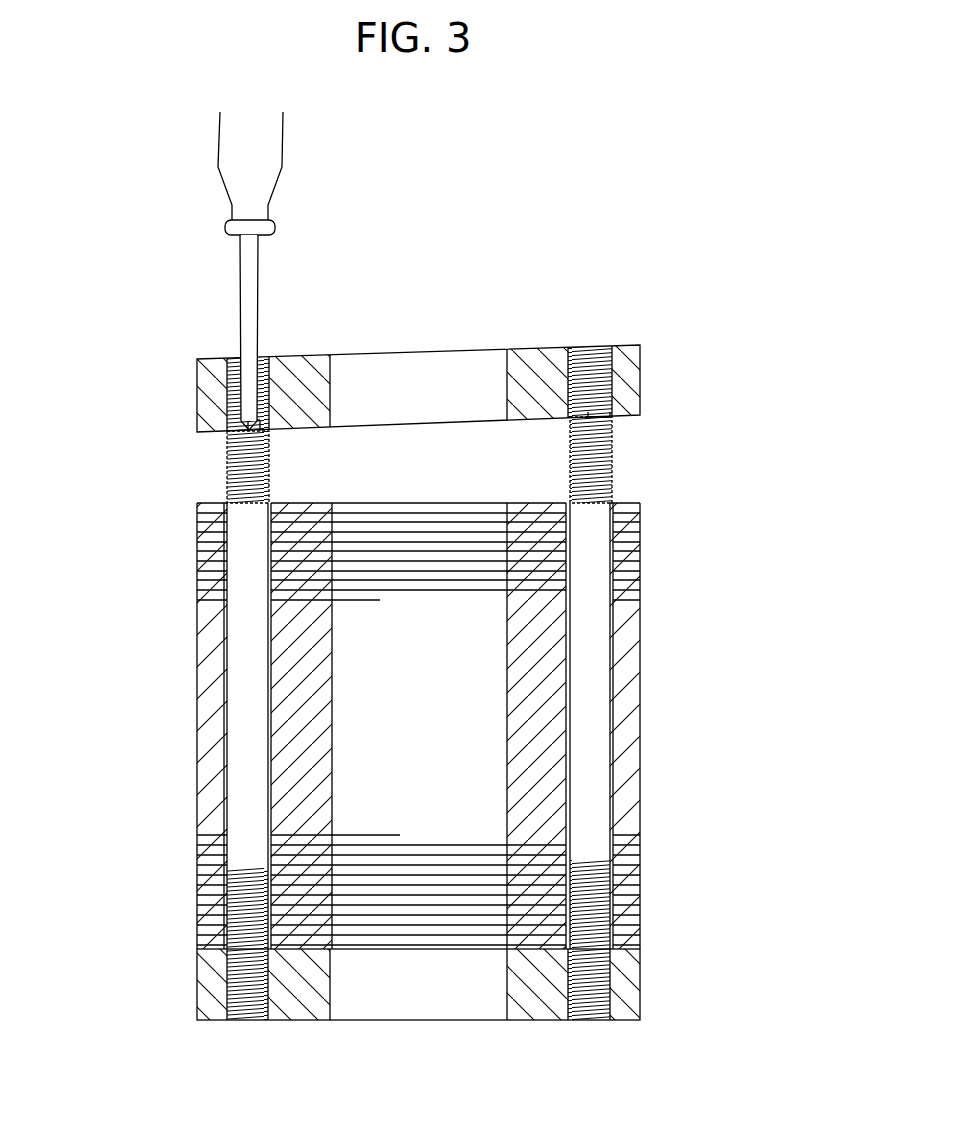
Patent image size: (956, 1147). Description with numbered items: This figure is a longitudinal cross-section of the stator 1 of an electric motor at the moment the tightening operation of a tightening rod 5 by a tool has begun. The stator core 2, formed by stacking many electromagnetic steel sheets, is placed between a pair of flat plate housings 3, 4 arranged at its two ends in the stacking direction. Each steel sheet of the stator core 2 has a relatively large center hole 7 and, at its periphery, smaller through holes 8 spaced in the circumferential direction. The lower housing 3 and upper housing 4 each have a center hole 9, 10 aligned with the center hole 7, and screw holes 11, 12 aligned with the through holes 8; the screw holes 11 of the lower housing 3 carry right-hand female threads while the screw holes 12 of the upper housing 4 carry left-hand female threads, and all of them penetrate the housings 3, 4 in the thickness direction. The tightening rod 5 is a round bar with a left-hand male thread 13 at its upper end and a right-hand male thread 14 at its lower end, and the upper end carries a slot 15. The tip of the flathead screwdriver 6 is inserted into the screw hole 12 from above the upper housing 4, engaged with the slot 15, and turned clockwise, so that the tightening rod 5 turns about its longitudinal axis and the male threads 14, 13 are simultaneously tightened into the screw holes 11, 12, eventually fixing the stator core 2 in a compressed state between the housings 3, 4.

The stator 1 is at (722, 236).
The stator core 2 is at (190, 720).
The housing 3 is at (190, 986).
The housing 4 is at (190, 398).
The tightening rod 5 is at (218, 664).
The flathead screwdriver 6 is at (185, 250).
The center hole 7 is at (518, 786).
The through hole 8 is at (232, 766).
The center hole 9 is at (338, 1020).
The center hole 10 is at (494, 350).
The screw hole 11 is at (258, 1020).
The screw hole 12 is at (250, 356).
The male thread 13 is at (228, 460).
The male thread 14 is at (230, 905).
The slot 15 is at (280, 420).